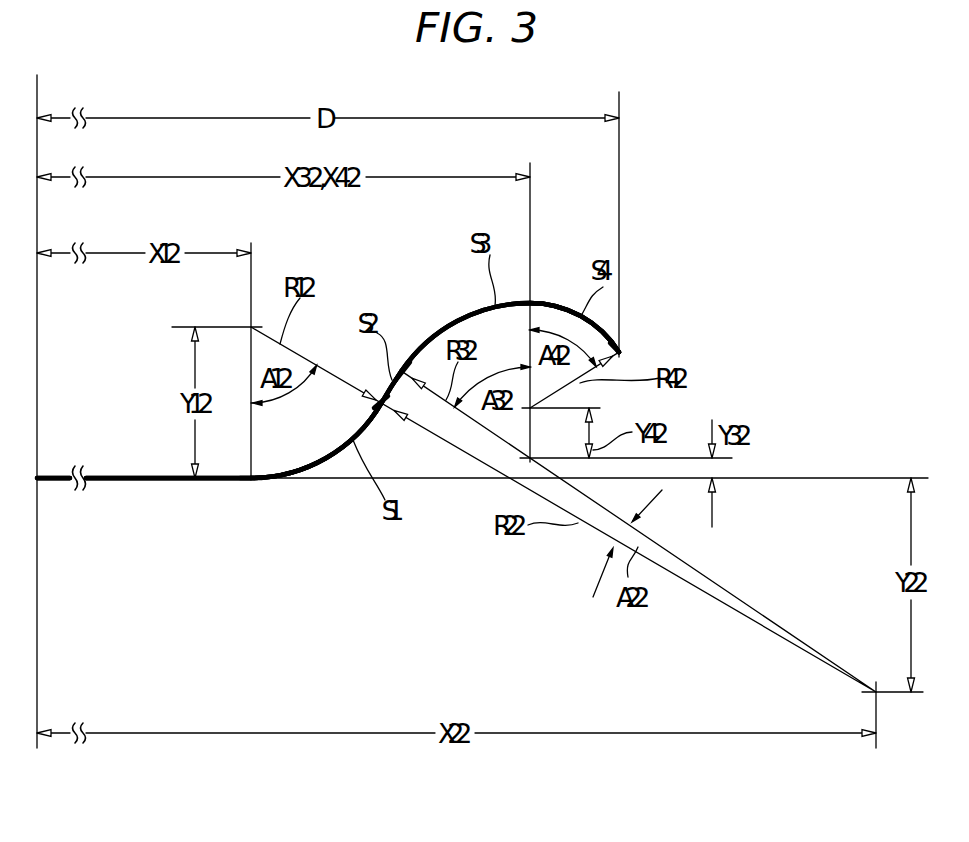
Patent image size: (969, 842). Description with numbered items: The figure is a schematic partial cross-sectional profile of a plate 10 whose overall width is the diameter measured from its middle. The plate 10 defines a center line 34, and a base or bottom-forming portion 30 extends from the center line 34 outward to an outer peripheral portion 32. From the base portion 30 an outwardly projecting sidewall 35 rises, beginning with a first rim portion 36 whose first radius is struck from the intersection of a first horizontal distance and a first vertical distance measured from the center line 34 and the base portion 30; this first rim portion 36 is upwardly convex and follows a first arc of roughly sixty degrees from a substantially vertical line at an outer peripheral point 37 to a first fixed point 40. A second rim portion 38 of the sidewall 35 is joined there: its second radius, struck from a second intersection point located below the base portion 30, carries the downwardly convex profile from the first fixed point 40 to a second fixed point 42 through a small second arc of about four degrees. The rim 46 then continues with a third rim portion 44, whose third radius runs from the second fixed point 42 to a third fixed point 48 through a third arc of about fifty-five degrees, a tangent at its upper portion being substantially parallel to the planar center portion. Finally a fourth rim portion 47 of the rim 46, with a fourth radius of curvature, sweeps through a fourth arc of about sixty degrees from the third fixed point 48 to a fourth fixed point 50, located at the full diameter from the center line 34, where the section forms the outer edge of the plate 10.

The plate 10 is at (140, 490).
The base or bottom-forming portion 30 is at (48, 474).
The outer peripheral portion 32 is at (383, 300).
The center line 34 is at (40, 486).
The outwardly projecting sidewall 35 is at (357, 432).
The first rim portion 36 is at (300, 482).
The outer peripheral point 37 is at (252, 482).
The second rim portion 38 is at (380, 392).
The first fixed point 40 is at (385, 412).
The second fixed point 42 is at (404, 365).
The third rim portion 44 is at (470, 312).
The rim 46 is at (600, 240).
The fourth rim portion 47 is at (608, 330).
The third fixed point 48 is at (530, 300).
The fourth fixed point 50 is at (621, 354).